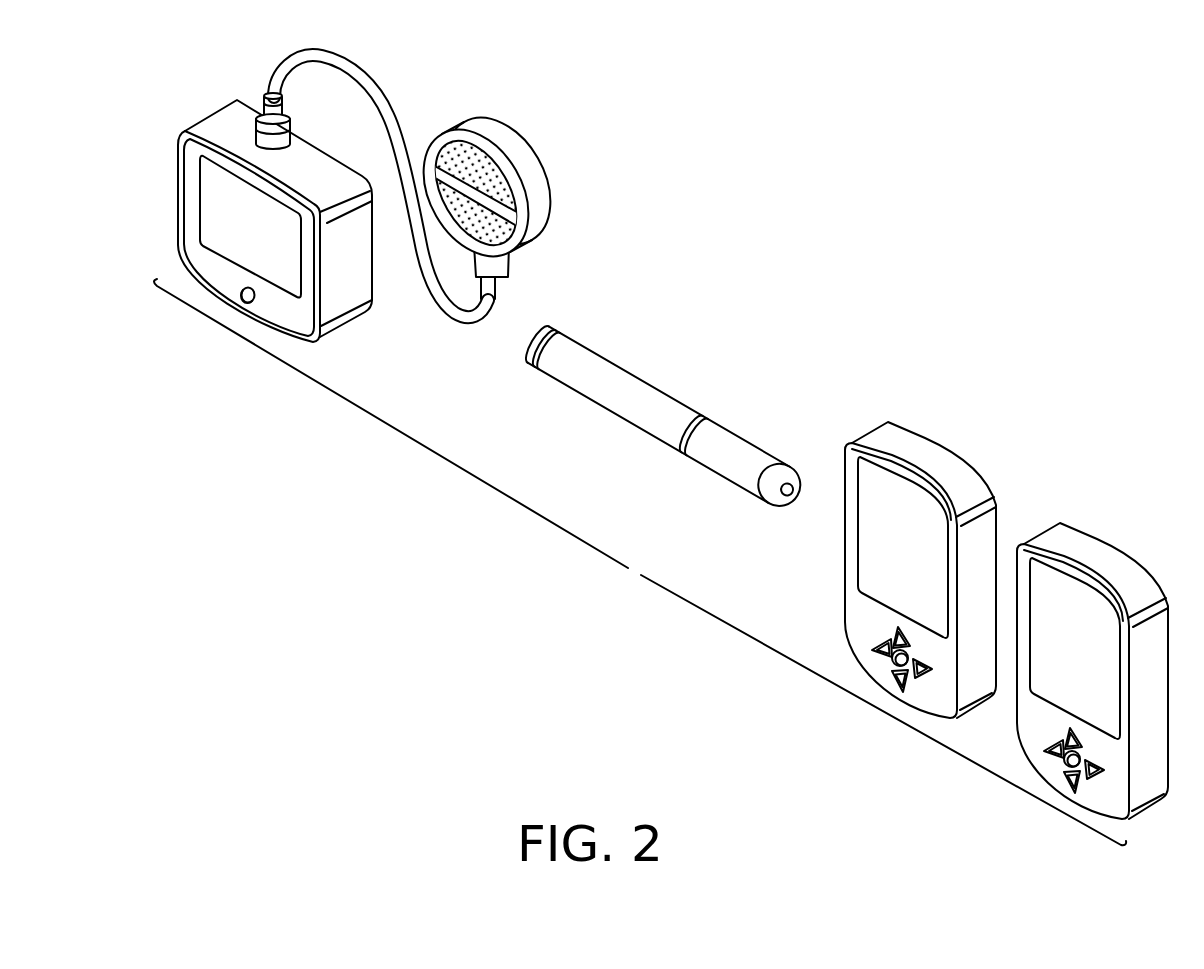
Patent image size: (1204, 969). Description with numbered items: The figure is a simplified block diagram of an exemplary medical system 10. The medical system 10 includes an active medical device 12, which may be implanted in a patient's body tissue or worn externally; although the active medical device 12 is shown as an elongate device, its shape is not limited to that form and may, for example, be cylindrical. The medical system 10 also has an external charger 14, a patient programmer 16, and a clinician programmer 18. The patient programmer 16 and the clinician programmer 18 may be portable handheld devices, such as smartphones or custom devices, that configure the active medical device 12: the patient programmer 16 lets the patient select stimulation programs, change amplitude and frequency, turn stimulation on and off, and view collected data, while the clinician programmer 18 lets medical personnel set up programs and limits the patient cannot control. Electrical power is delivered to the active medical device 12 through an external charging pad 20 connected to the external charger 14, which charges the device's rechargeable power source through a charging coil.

The medical system 10 is at (641, 575).
The active medical device 12 is at (701, 354).
The external charger 14 is at (197, 105).
The patient programmer 16 is at (945, 434).
The clinician programmer 18 is at (1101, 649).
The external charging pad 20 is at (510, 143).